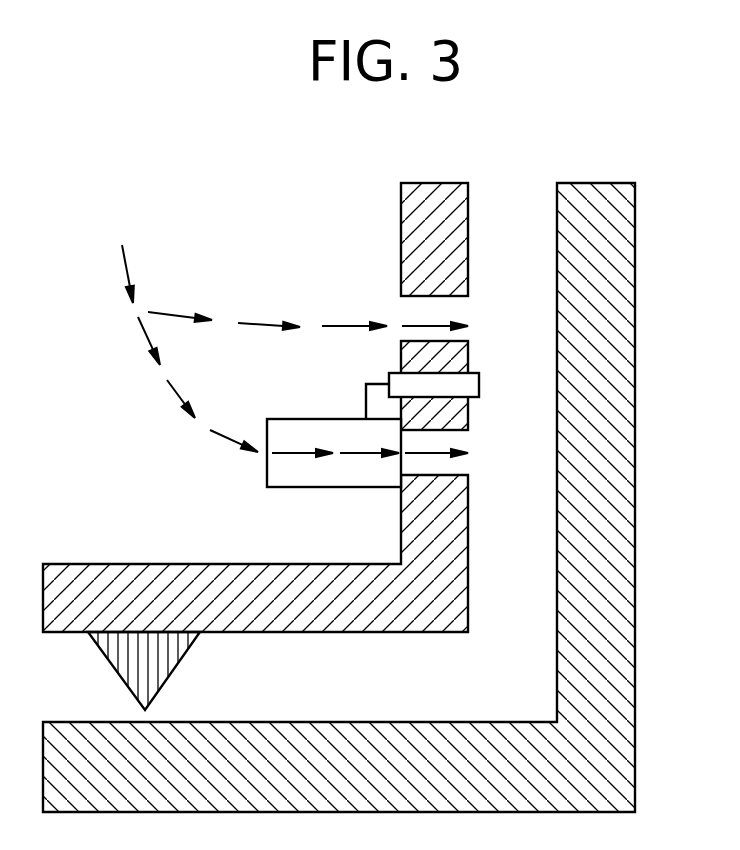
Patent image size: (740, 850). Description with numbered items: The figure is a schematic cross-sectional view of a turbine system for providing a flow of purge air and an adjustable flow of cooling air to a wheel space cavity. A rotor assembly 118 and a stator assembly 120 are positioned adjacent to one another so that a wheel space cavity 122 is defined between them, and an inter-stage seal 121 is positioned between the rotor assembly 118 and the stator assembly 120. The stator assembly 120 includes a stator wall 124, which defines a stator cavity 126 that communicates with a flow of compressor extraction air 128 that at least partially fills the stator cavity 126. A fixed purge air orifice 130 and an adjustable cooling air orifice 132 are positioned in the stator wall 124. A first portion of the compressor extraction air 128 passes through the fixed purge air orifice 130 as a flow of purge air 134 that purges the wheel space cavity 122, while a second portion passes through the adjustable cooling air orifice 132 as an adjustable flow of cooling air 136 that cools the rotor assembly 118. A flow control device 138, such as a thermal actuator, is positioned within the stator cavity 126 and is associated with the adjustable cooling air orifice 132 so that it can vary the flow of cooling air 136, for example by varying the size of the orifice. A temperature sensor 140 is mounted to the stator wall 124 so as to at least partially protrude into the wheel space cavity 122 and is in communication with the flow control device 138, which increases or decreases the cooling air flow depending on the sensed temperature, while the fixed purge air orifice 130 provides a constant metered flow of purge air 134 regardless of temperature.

The rotor assembly 118 is at (557, 228).
The stator assembly 120 is at (401, 231).
The inter-stage seal 121 is at (170, 657).
The wheel space cavity 122 is at (533, 563).
The stator wall 124 is at (468, 203).
The stator cavity 126 is at (175, 499).
The flow of compressor extraction air 128 is at (128, 272).
The fixed purge air orifice 130 is at (465, 296).
The adjustable cooling air orifice 132 is at (466, 476).
The flow of purge air 134 is at (437, 316).
The adjustable flow of cooling air 136 is at (440, 448).
The flow control device 138 is at (312, 419).
The temperature sensor 140 is at (390, 374).